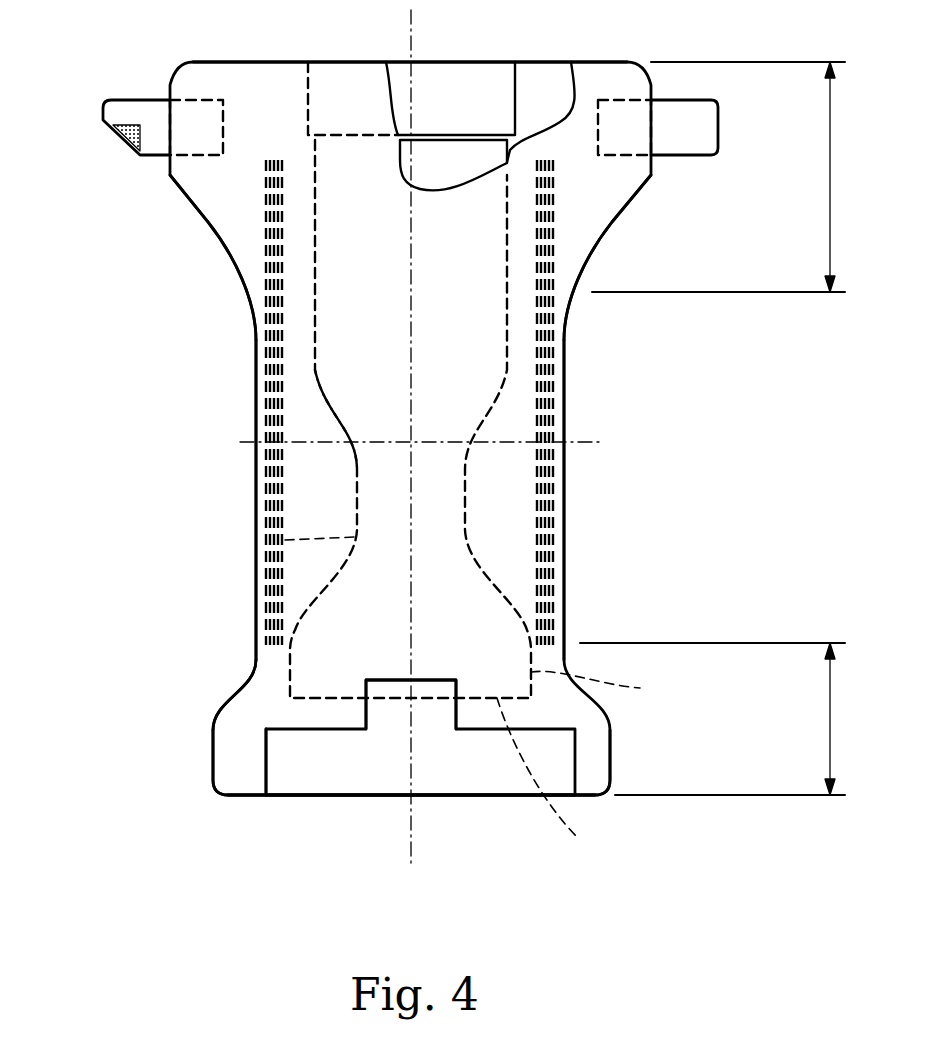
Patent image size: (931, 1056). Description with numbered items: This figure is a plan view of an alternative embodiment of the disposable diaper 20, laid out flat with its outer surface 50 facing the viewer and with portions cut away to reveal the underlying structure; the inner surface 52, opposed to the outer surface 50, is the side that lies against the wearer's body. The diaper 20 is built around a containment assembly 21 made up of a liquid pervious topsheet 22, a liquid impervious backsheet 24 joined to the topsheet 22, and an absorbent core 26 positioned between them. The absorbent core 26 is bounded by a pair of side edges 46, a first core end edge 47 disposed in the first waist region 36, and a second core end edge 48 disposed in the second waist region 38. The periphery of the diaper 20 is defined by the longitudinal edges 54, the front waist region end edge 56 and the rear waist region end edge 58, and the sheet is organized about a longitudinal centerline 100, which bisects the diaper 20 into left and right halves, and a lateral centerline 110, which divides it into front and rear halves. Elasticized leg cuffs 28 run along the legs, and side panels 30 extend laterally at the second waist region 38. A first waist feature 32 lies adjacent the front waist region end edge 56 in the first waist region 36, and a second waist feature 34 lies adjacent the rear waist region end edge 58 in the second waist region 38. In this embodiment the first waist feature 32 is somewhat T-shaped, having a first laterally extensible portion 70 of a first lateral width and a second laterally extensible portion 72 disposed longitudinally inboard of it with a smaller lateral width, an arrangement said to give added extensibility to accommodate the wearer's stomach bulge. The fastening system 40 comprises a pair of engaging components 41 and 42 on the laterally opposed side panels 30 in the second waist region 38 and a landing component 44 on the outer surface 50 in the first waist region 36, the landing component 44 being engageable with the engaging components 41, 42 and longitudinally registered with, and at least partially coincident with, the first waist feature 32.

The diaper 20 is at (652, 419).
The containment assembly 21 is at (370, 420).
The topsheet 22 is at (558, 101).
The backsheet 24 is at (458, 337).
The absorbent core 26 is at (459, 177).
The elasticized leg cuffs 28 is at (265, 495).
The side panels 30 is at (228, 215).
The first waist feature 32 is at (325, 785).
The second waist feature 34 is at (486, 115).
The first waist region 36 is at (832, 718).
The second waist region 38 is at (832, 175).
The fastening system 40 is at (391, 460).
The engaging component 41 is at (118, 108).
The engaging component 42 is at (680, 148).
The landing component 44 is at (428, 780).
The side edges 46 is at (268, 548).
The first core end edge 47 is at (558, 781).
The second core end edge 48 is at (373, 135).
The outer surface 50 is at (230, 762).
The inner surface 52 is at (272, 683).
The longitudinal edges 54 is at (256, 368).
The front waist region end edge 56 is at (362, 797).
The rear waist region end edge 58 is at (290, 62).
The first laterally extensible portion 70 is at (283, 773).
The second laterally extensible portion 72 is at (382, 712).
The longitudinal centerline 100 is at (415, 27).
The lateral centerline 110 is at (592, 442).